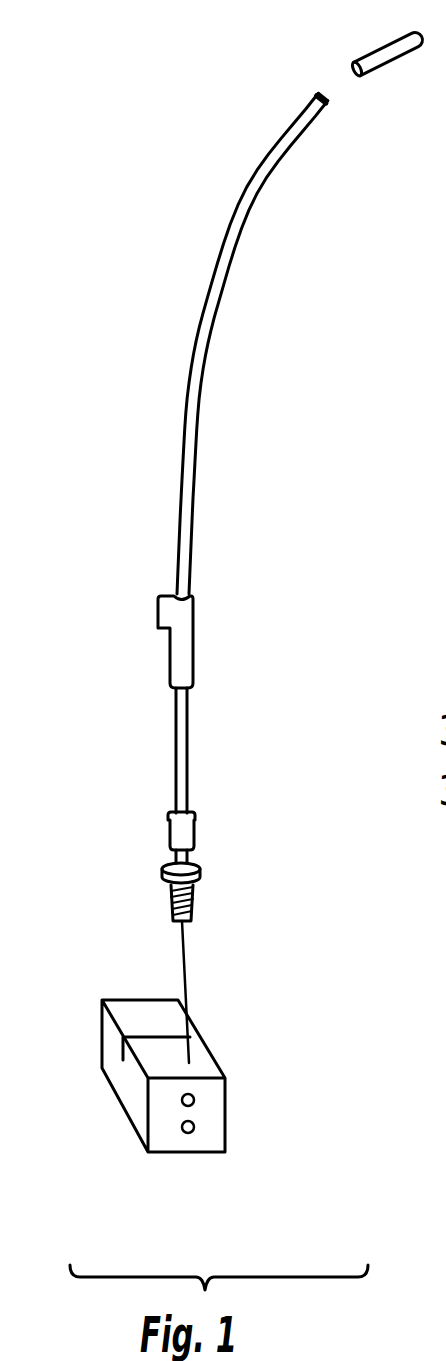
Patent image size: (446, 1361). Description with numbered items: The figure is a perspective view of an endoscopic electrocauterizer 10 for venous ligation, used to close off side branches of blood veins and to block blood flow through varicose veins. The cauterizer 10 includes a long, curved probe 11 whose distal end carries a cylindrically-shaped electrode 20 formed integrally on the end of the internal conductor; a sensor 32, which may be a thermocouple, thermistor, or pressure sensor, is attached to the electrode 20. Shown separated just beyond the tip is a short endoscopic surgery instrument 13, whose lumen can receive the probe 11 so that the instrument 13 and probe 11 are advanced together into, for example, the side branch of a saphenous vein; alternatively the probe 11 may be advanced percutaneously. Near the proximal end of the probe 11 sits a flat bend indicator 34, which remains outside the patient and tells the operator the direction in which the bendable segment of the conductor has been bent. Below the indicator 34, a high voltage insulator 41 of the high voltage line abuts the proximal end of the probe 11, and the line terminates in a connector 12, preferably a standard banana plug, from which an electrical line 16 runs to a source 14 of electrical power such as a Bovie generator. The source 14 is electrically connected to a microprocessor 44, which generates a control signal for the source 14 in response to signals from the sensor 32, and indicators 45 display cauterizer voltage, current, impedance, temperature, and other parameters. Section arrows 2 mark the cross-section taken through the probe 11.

The endoscopic electrocauterizer 10 is at (236, 631).
The probe 11 is at (210, 284).
The connector 12 is at (201, 871).
The endoscopic surgery instrument 13 is at (400, 57).
The source of electrical power 14 is at (177, 1072).
The electrical line 16 is at (192, 1007).
The section line 2 is at (345, 78).
The electrode 20 is at (331, 101).
The sensor 32 is at (317, 96).
The bend indicator 34 is at (158, 600).
The high voltage insulator 41 is at (189, 722).
The microprocessor 44 is at (125, 1008).
The indicators 45 is at (192, 1133).